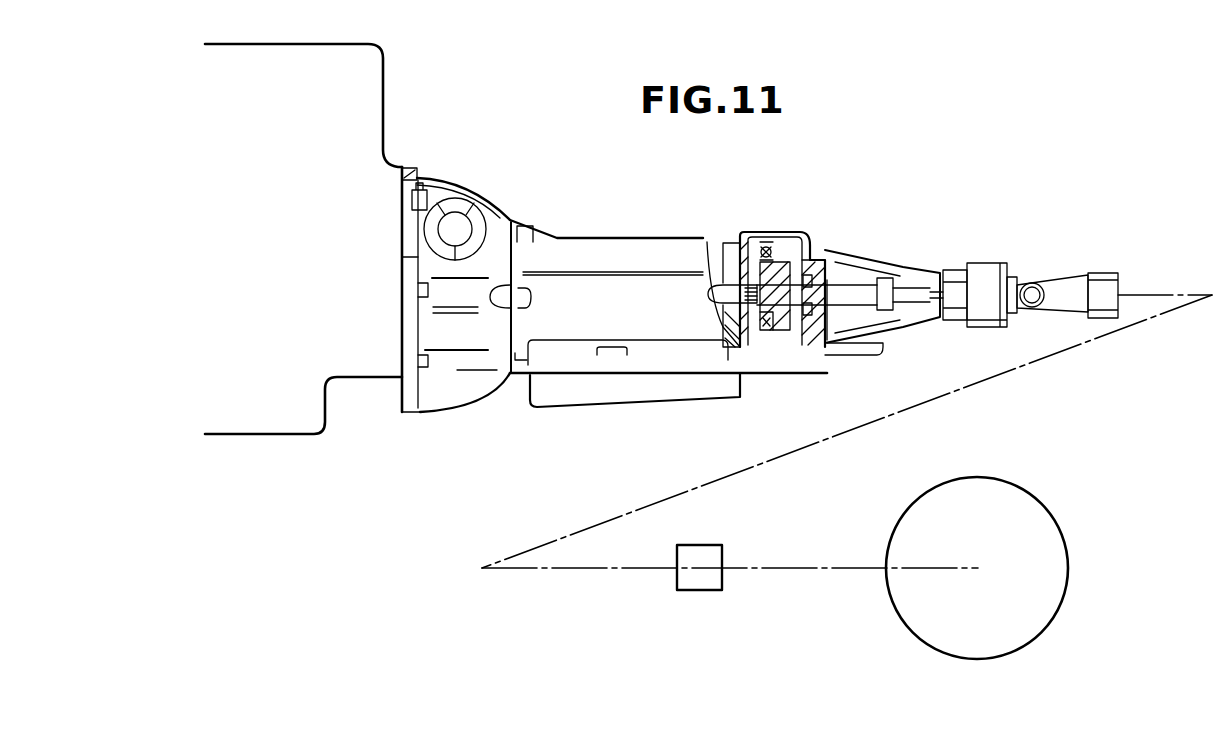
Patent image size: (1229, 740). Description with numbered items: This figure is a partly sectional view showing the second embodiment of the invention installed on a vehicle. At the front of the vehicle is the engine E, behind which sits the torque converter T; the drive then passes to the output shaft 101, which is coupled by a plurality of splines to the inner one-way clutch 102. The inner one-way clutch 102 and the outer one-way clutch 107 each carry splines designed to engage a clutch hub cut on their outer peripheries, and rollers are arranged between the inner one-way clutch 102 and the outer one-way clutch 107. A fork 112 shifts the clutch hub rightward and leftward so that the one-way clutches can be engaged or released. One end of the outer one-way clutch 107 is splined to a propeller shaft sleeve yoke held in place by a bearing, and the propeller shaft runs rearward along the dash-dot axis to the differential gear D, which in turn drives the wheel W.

The engine E is at (348, 115).
The torque converter T is at (467, 203).
The output shaft 101 is at (727, 290).
The inner one-way clutch 102 is at (753, 267).
The fork 112 is at (770, 247).
The outer one-way clutch 107 is at (797, 260).
The differential gear D is at (717, 557).
The wheel W is at (1012, 492).